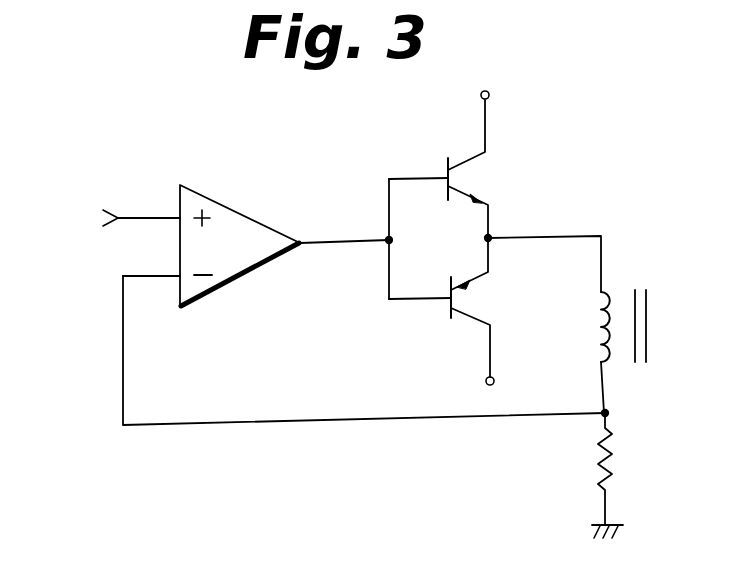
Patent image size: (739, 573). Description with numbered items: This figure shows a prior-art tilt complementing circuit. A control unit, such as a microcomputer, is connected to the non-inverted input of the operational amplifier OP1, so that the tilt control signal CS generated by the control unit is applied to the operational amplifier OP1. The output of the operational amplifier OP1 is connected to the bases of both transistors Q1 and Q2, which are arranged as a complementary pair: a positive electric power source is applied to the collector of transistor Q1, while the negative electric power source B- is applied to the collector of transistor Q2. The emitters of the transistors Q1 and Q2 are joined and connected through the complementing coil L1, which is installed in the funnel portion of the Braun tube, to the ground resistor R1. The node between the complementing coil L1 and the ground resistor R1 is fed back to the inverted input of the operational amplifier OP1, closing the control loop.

The tilt control signal CS is at (116, 219).
The operational amplifier OP1 is at (240, 246).
The transistor Q1 is at (490, 169).
The transistor Q2 is at (492, 307).
The electric power source B- is at (507, 392).
The complementing coil L1 is at (603, 351).
The ground resistor R1 is at (628, 469).